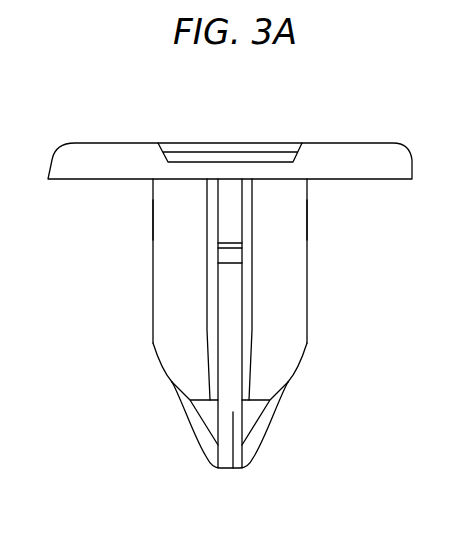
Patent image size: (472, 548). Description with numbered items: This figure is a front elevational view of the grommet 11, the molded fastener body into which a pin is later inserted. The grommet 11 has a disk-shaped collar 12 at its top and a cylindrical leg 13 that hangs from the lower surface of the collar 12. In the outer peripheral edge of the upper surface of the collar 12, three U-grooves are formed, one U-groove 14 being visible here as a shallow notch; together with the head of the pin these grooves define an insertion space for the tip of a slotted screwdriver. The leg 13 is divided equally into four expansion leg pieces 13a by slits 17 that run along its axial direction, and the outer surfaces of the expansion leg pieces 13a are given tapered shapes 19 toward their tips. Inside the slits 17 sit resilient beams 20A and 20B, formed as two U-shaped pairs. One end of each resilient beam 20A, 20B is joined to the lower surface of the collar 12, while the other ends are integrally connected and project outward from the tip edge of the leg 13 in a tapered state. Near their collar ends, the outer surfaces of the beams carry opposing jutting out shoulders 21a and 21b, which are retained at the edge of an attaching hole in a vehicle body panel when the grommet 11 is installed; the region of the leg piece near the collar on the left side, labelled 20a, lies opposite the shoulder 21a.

The grommet 11 is at (383, 126).
The collar 12 is at (78, 155).
The leg 13 is at (134, 258).
The expansion leg piece 13a is at (295, 312).
The U-groove 14 is at (240, 160).
The slit 17 is at (218, 283).
The tapered shape 19 is at (297, 365).
The left leg upper part 20a is at (152, 220).
The jutting out shoulder 21a is at (308, 220).
The jutting out shoulder 21b is at (242, 250).
The resilient beam 20A is at (177, 405).
The resilient beam 20B is at (233, 412).